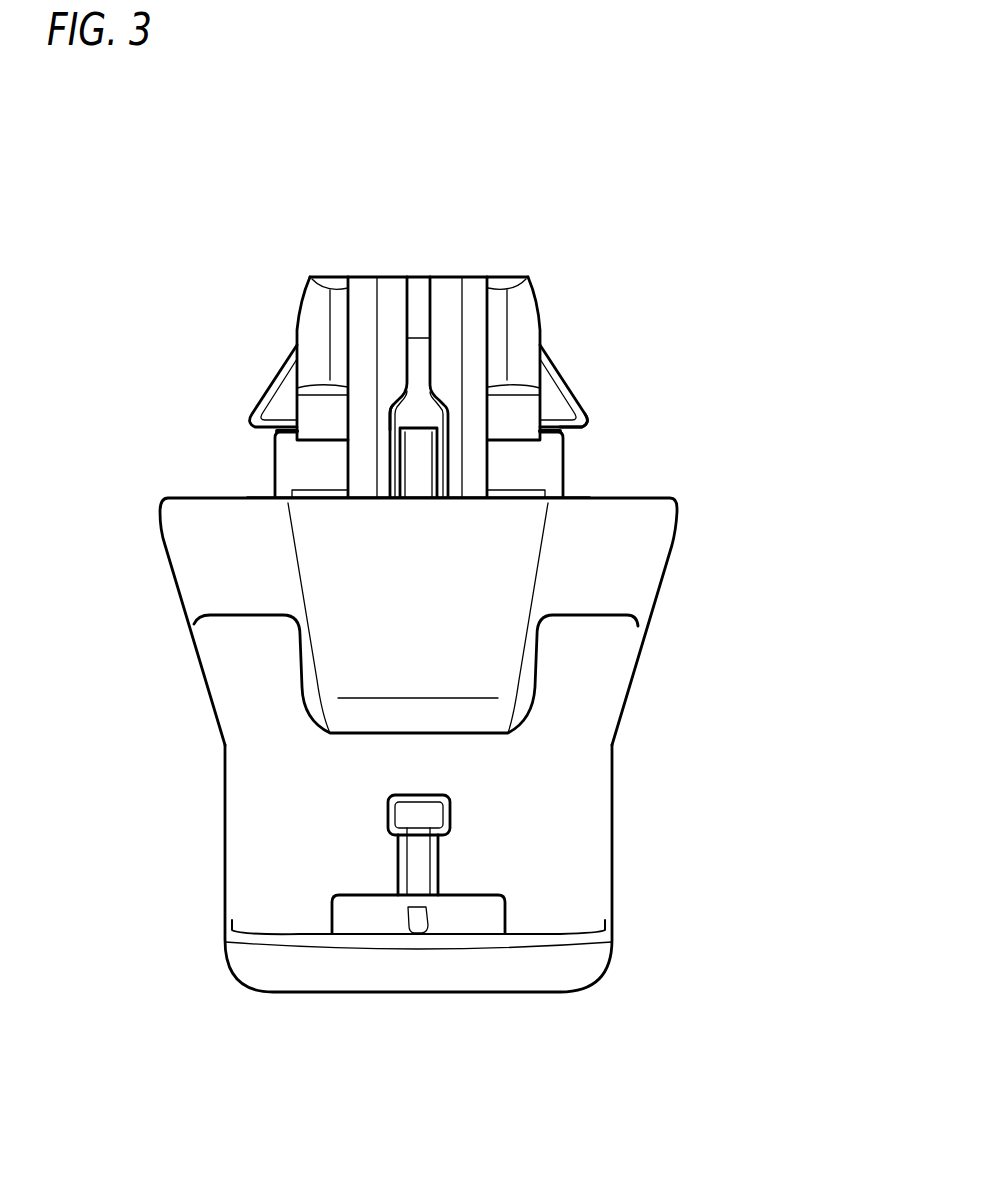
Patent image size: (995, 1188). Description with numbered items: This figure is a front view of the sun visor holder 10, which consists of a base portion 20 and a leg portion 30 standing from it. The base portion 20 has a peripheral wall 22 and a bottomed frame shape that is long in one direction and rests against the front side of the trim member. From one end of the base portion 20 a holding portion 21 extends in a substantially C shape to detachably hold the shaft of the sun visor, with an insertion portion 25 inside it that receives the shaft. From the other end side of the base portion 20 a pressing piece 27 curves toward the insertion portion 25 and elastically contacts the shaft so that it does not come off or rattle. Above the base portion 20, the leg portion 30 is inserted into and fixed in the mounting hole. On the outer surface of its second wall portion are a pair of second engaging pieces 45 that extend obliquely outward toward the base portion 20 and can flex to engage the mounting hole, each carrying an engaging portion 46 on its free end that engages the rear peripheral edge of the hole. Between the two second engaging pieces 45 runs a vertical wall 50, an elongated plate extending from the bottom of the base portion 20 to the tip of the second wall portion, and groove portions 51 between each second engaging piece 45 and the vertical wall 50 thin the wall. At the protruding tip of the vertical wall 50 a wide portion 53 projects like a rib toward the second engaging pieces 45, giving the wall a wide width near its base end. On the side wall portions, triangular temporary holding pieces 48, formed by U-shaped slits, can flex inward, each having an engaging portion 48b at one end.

The sun visor holder 10 is at (195, 232).
The base portion 20 is at (695, 532).
The holding portion 21 is at (613, 918).
The peripheral wall 22 is at (187, 550).
The insertion portion 25 is at (580, 838).
The pressing piece 27 is at (332, 685).
The leg portion 30 is at (537, 270).
The second engaging piece 45 is at (305, 332).
The engaging portion 46 is at (515, 427).
The temporary holding piece 48 is at (272, 398).
The engaging portion 48b is at (572, 442).
The vertical wall 50 is at (417, 287).
The groove portion 51 is at (362, 283).
The wide portion 53 is at (407, 415).